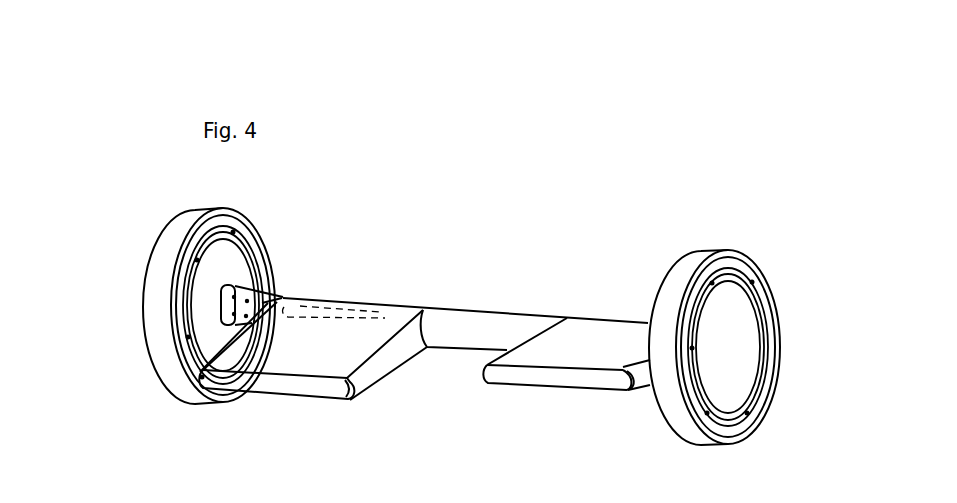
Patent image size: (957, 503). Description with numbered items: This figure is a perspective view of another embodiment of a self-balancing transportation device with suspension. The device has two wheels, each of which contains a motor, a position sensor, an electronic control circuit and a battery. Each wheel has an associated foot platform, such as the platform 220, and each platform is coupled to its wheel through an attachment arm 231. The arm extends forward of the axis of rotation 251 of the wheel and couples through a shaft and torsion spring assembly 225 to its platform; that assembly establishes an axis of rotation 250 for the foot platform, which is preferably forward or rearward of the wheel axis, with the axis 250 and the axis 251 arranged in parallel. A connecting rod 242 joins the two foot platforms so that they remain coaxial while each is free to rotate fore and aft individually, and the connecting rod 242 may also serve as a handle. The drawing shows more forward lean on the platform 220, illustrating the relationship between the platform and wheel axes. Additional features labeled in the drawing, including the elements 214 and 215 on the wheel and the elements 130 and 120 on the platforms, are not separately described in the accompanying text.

The platform 220 is at (644, 169).
The tire 214 is at (208, 207).
The rim 215 is at (250, 237).
The axis of rotation of the wheel 251 is at (235, 318).
The attachment arm 231 is at (270, 300).
The shaft and torsion spring assembly 225 is at (333, 302).
The first footboard 130 is at (295, 398).
The second footboard 120 is at (572, 390).
The connecting rod 242 is at (485, 318).
The axis of rotation for each foot platform 250 is at (378, 316).